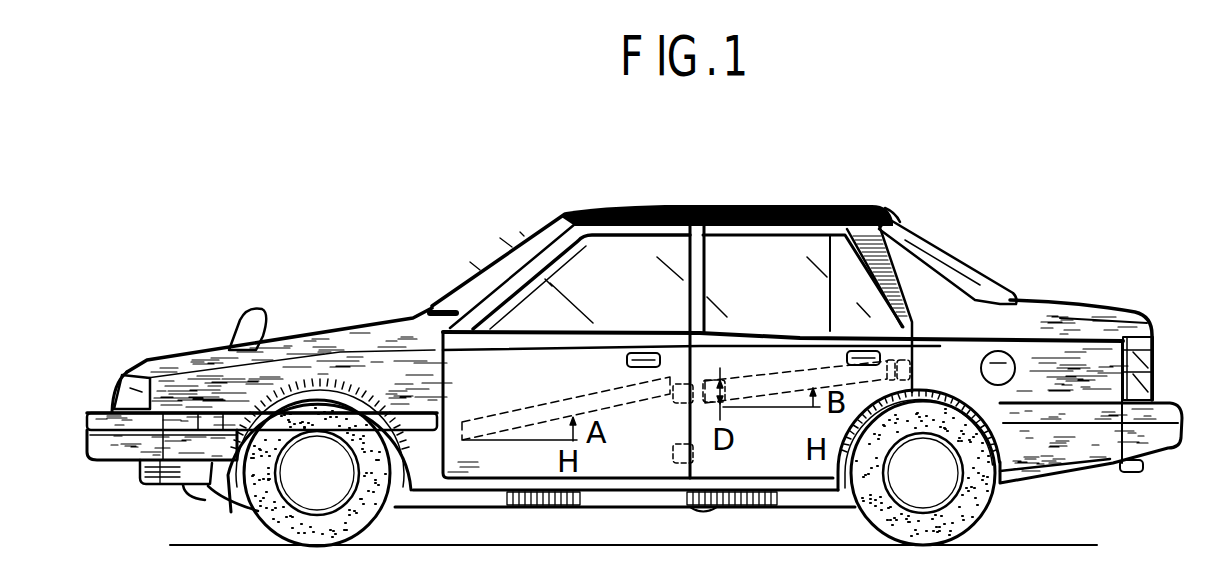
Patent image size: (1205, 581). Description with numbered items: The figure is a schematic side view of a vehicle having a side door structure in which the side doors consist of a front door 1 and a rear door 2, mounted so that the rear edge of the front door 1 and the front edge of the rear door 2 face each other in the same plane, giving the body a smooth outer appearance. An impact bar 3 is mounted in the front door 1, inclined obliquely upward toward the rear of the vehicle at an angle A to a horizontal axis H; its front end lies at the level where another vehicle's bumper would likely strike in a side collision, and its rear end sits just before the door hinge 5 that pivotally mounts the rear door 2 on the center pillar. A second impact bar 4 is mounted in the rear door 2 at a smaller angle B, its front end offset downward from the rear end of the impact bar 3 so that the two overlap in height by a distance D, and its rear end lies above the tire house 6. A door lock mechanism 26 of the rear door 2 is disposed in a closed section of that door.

The front door 1 is at (513, 315).
The rear door 2 is at (864, 292).
The impact bar 3 is at (502, 420).
The impact bar 4 is at (773, 380).
The door hinge 5 is at (703, 378).
The tire house 6 is at (877, 423).
The door lock mechanism 26 is at (980, 295).